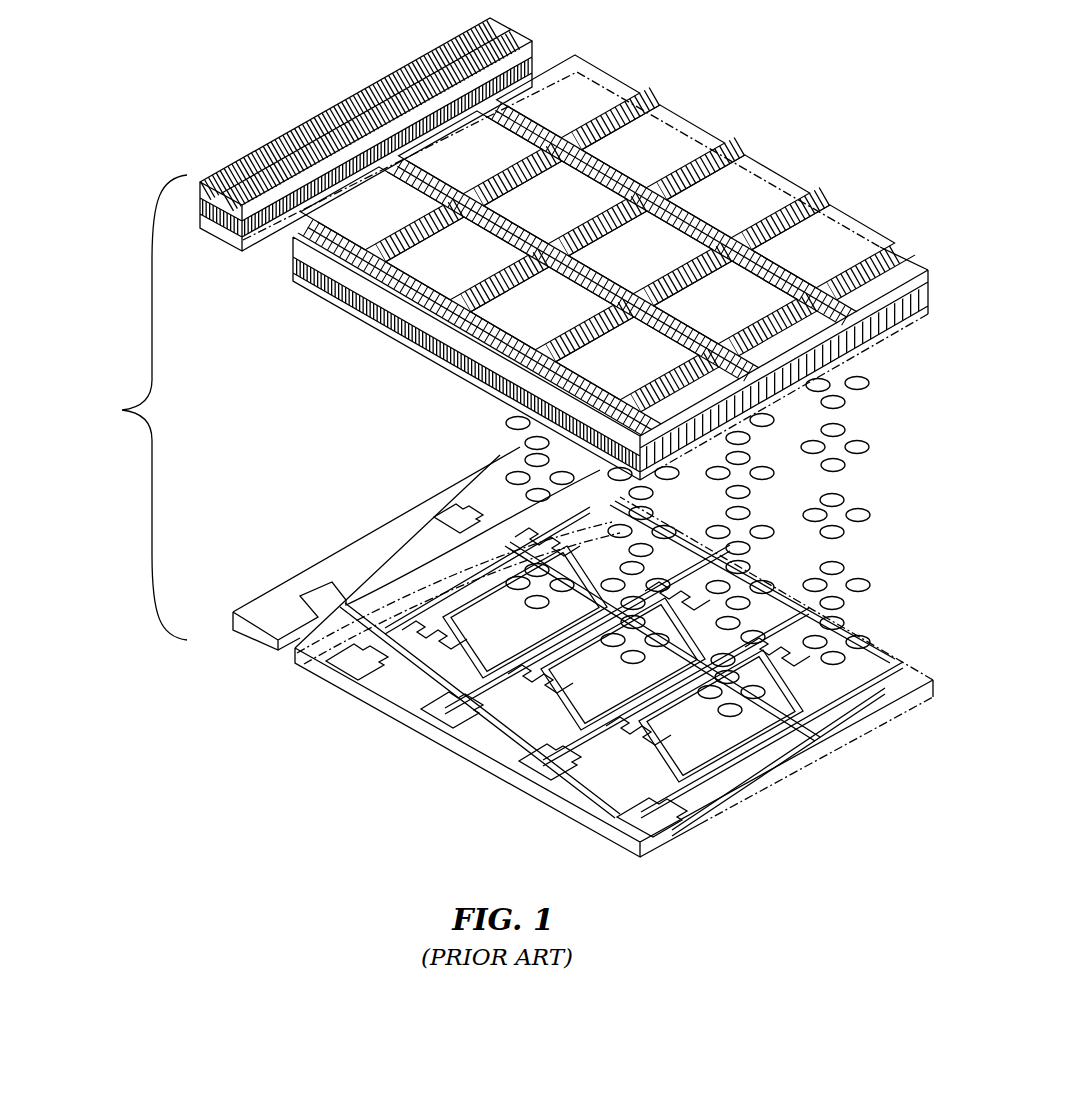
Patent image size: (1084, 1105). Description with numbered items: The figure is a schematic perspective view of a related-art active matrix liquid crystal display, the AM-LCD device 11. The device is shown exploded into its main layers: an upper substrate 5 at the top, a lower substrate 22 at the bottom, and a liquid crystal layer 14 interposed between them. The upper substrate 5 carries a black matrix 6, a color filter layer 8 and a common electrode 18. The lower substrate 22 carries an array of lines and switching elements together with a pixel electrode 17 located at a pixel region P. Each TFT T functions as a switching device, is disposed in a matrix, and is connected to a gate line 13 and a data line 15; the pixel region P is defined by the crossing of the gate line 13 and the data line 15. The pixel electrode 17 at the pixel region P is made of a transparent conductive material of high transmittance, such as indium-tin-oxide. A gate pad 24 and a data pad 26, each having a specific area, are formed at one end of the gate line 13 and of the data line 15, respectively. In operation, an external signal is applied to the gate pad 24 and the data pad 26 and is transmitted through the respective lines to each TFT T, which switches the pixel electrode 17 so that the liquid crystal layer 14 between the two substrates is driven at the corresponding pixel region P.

The AM-LCD device 11 is at (124, 411).
The upper substrate 5 is at (216, 202).
The black matrix 6 is at (236, 210).
The color filter layer 8 is at (857, 247).
The common electrode 18 is at (482, 383).
The liquid crystal layer 14 is at (848, 570).
The lower substrate 22 is at (600, 828).
The gate pad 24 is at (305, 588).
The data pad 26 is at (437, 722).
The gate line 13 is at (700, 813).
The pixel electrode 17 is at (725, 762).
The data line 15 is at (563, 752).
The TFT T is at (500, 712).
The pixel region P is at (773, 735).